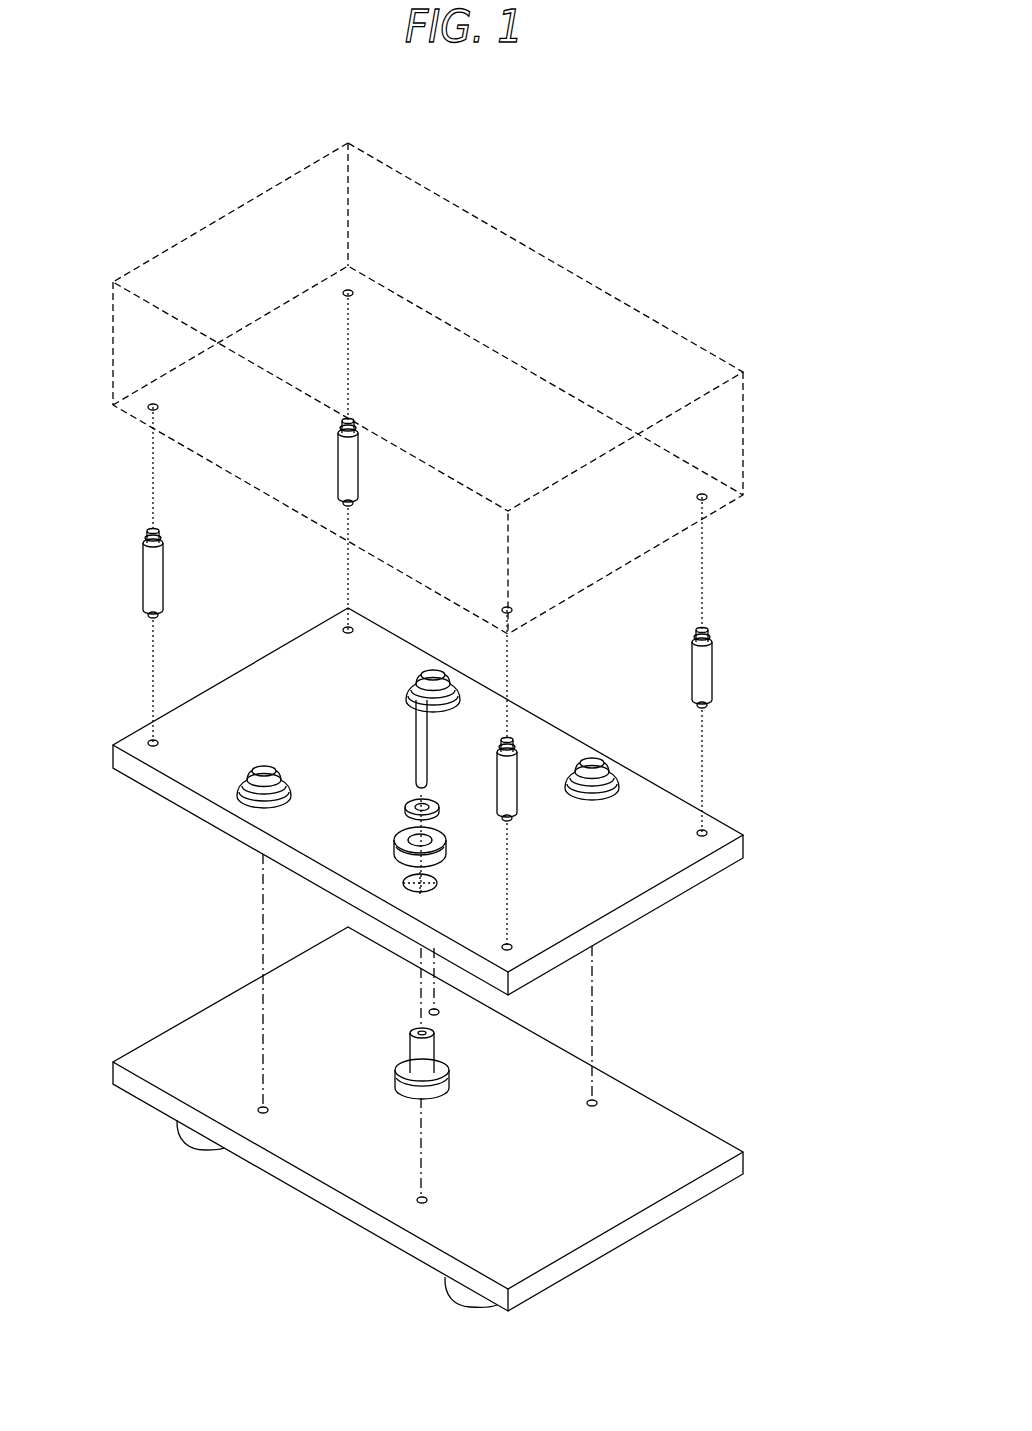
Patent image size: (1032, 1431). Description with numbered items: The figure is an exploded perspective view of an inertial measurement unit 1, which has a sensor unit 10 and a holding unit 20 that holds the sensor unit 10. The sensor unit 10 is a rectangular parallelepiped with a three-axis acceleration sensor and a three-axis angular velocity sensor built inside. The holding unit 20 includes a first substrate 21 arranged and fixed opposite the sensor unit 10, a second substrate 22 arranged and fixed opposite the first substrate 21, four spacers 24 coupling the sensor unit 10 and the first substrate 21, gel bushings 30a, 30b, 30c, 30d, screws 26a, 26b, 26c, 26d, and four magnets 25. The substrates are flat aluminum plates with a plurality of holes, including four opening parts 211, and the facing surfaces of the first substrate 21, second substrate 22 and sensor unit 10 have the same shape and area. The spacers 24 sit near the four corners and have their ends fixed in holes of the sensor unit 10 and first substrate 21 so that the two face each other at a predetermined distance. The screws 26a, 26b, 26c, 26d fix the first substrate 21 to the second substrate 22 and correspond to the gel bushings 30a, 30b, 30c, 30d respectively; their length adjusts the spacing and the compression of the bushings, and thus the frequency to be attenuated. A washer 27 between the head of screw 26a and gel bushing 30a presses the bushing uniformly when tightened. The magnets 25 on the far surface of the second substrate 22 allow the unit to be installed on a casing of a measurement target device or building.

The inertial measurement unit 1 is at (658, 184).
The sensor unit 10 is at (745, 428).
The holding unit 20 is at (816, 650).
The first substrate 21 is at (745, 845).
The second substrate 22 is at (745, 1163).
The spacer 24 is at (150, 580).
The magnet 25 is at (190, 1148).
The screw 26a is at (269, 766).
The screw 26b is at (591, 758).
The screw 26c is at (415, 725).
The screw 26d is at (430, 664).
The washer 27 is at (405, 805).
The opening part 211 is at (437, 879).
The gel bushing 30a is at (234, 780).
The gel bushing 30b is at (622, 768).
The gel bushing 30c is at (388, 826).
The gel bushing 30d is at (454, 716).